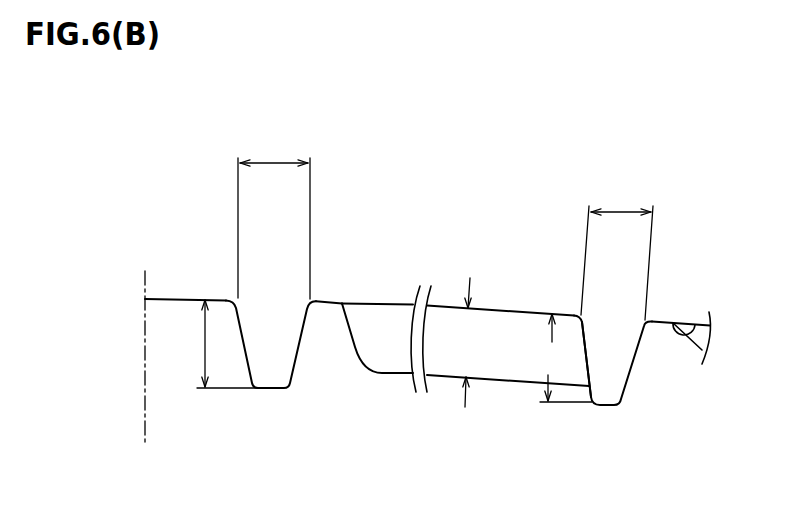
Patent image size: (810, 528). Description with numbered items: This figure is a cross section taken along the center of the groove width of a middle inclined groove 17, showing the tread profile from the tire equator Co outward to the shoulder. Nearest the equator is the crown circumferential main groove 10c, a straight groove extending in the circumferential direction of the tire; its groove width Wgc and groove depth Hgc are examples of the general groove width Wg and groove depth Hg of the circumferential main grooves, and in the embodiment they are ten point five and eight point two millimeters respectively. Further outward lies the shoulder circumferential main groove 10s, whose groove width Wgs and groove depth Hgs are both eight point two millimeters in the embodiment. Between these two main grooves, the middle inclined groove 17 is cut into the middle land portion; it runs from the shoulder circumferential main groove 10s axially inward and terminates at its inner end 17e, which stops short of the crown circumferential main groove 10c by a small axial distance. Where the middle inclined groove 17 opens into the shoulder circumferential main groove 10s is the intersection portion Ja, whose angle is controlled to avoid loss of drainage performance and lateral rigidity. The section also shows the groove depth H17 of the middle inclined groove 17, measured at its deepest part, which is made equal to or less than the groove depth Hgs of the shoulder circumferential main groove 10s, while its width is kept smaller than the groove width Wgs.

The crown circumferential main groove 10c is at (275, 335).
The shoulder circumferential main groove 10s is at (617, 350).
The middle inclined groove 17 is at (512, 342).
The inner end of the middle inclined groove 17e is at (346, 288).
The intersection portion Ja is at (598, 373).
The tire equator Co is at (145, 345).
The groove width of the crown circumferential main groove Wgc is at (278, 215).
The groove width Wg is at (278, 215).
The groove depth of the crown circumferential main groove Hgc is at (203, 343).
The groove depth Hg is at (207, 398).
The groove width of the shoulder circumferential main groove Wgs is at (617, 250).
The groove depth of the shoulder circumferential main groove Hgs is at (559, 358).
The groove depth of the middle inclined groove H17 is at (465, 342).